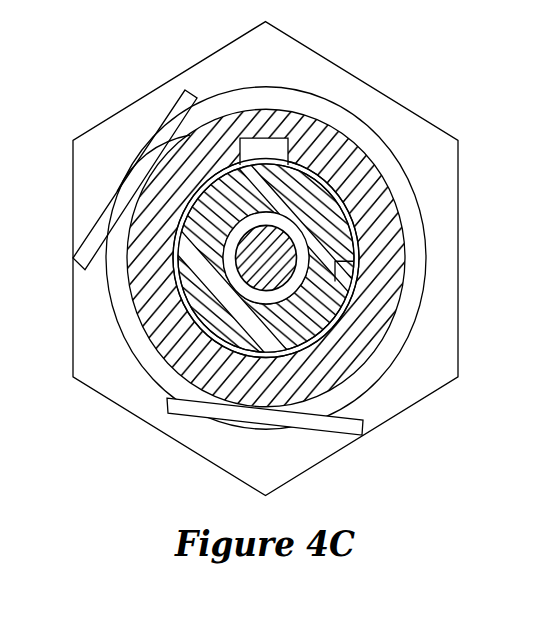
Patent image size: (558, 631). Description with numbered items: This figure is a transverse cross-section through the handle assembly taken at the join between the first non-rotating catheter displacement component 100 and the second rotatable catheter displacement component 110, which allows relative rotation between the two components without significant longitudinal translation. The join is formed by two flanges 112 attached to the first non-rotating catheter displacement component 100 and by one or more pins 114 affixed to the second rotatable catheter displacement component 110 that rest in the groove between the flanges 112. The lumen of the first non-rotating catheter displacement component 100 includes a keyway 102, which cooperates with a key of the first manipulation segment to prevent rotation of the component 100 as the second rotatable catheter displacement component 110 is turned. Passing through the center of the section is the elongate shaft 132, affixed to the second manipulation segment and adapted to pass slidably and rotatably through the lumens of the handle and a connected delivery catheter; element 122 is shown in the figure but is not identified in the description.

The first non-rotating catheter displacement component 100 is at (383, 205).
The keyway 102 is at (283, 143).
The second rotatable catheter displacement component 110 is at (102, 143).
The flange 112 is at (238, 98).
The pin 114 is at (335, 425).
The rotor 122 is at (336, 298).
The elongate shaft 132 is at (205, 320).